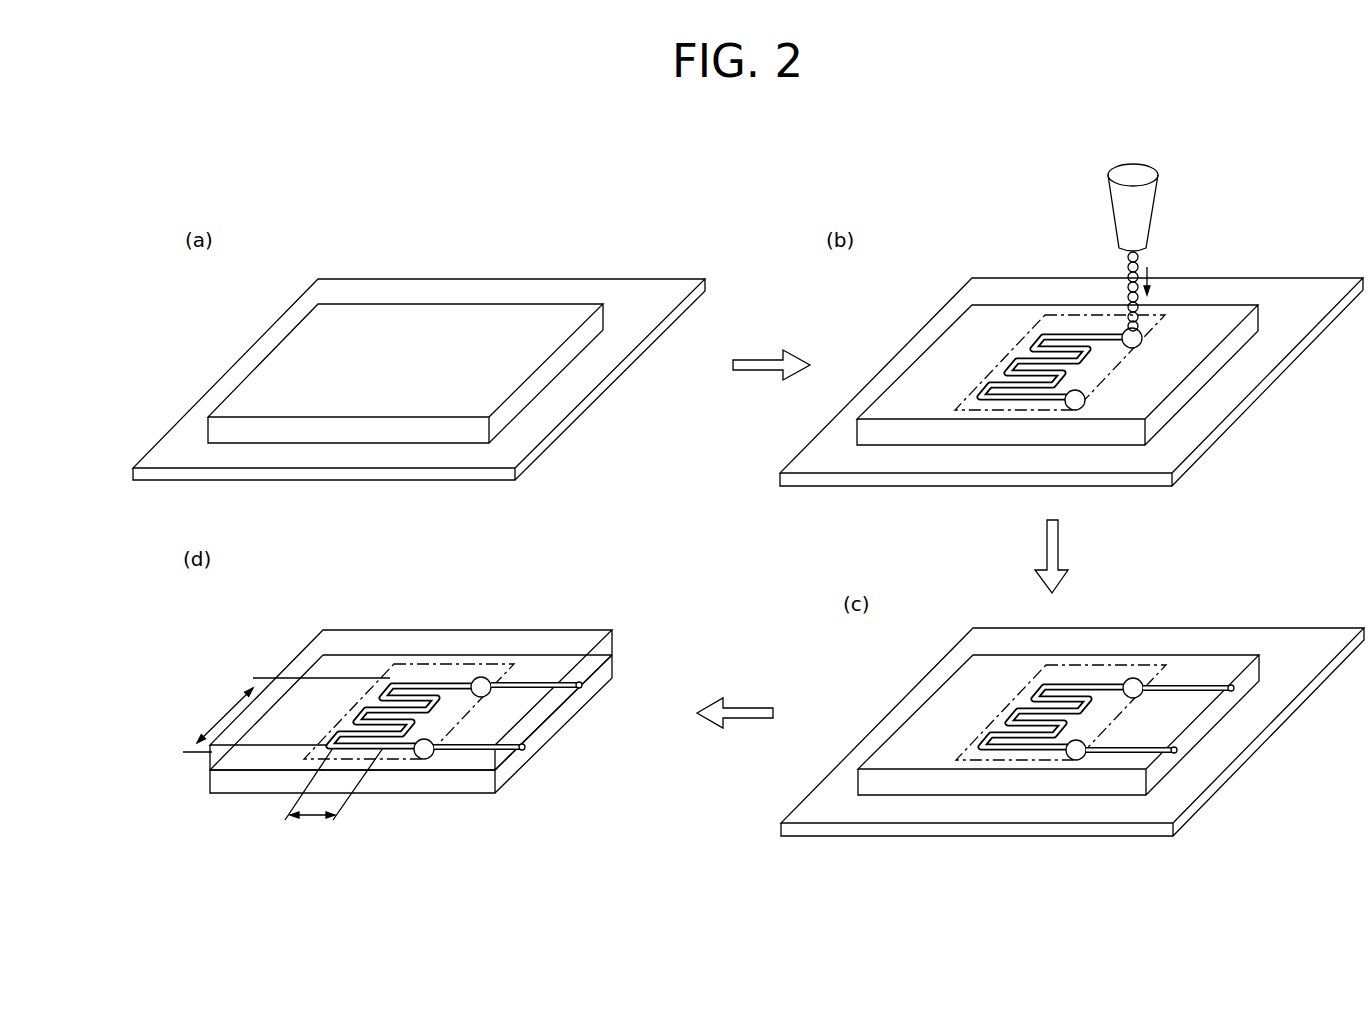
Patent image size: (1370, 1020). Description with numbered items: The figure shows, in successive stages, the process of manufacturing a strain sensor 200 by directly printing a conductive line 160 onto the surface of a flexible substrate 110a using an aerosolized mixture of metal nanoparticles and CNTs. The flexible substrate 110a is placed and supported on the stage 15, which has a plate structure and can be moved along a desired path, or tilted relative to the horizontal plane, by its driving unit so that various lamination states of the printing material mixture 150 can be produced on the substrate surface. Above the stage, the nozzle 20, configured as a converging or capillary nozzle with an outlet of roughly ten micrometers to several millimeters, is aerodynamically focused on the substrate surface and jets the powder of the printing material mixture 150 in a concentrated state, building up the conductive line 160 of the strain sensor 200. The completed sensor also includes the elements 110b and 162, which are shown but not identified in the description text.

The stage 15 is at (132, 474).
The nozzle 20 is at (1155, 207).
The flexible substrate 110a is at (207, 428).
The second substrate 110b is at (210, 759).
The printing material mixture 150 is at (1140, 255).
The conductive line 160 is at (1056, 314).
The wiring 162 is at (1232, 692).
The strain sensor 200 is at (363, 739).